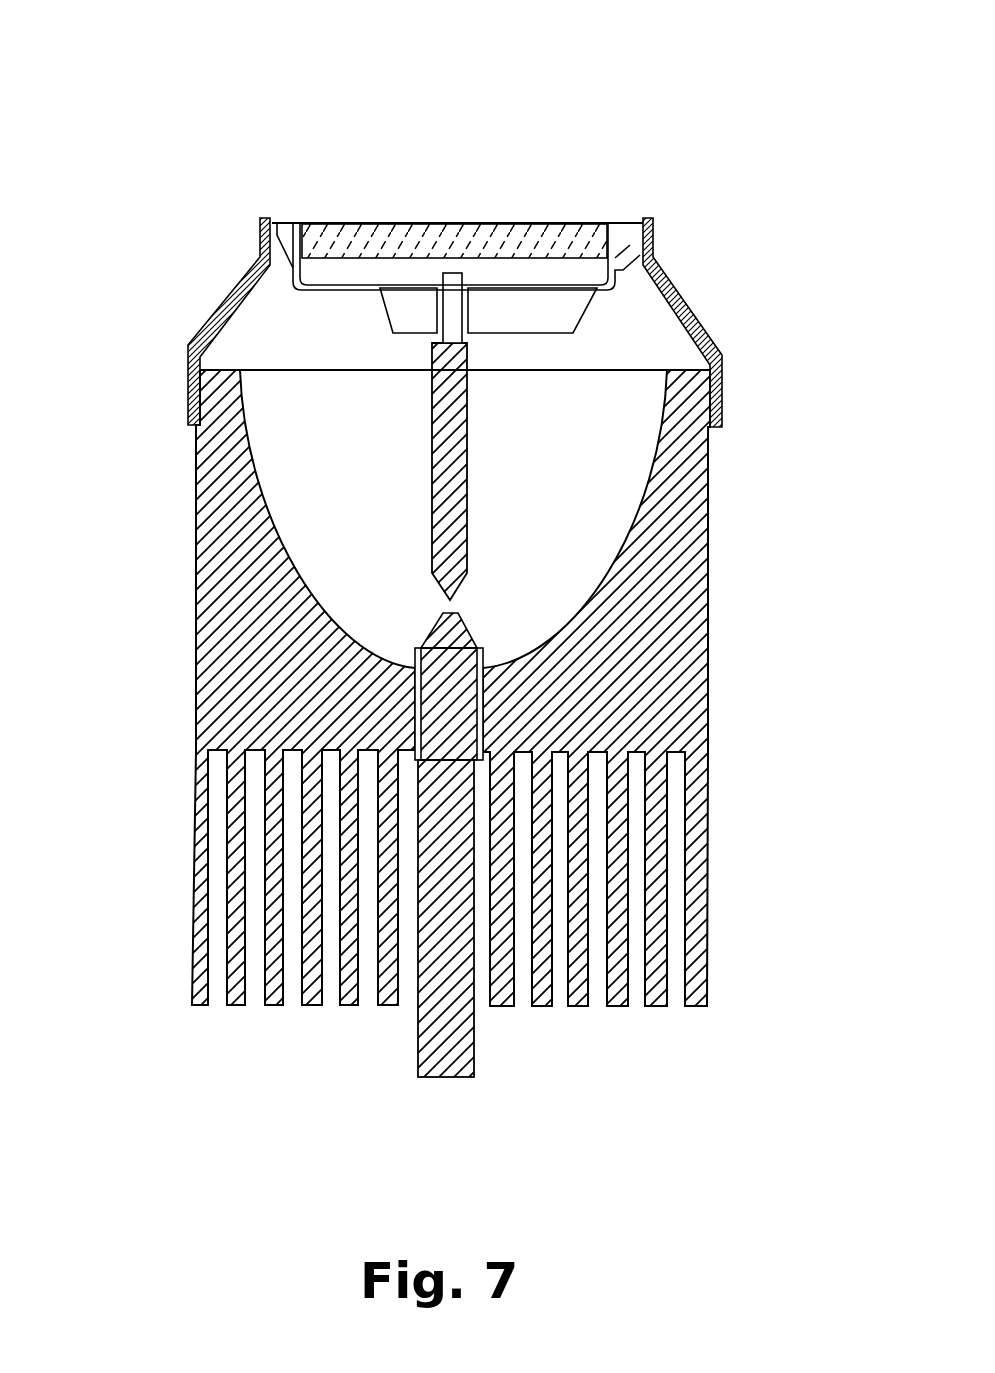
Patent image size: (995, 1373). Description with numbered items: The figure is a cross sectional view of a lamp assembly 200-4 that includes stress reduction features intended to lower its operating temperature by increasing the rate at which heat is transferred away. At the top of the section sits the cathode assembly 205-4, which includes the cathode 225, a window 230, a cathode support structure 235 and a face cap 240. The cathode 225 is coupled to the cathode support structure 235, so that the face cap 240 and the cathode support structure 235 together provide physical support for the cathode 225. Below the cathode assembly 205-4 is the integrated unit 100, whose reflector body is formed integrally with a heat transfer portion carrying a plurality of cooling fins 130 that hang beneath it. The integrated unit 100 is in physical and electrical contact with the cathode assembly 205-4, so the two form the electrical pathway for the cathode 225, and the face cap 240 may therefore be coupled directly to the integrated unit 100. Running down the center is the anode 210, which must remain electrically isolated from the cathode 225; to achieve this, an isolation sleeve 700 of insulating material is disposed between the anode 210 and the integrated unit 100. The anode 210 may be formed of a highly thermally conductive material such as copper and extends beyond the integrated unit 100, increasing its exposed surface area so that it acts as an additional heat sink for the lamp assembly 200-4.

The lamp assembly 200-4 is at (193, 58).
The cathode assembly 205-4 is at (444, 322).
The cathode 225 is at (477, 455).
The window 230 is at (572, 222).
The cathode support structure 235 is at (387, 315).
The face cap 240 is at (677, 297).
The integrated unit 100 is at (710, 642).
The isolation sleeve 700 is at (413, 708).
The cooling fins 130 is at (192, 962).
The anode 210 is at (417, 1002).